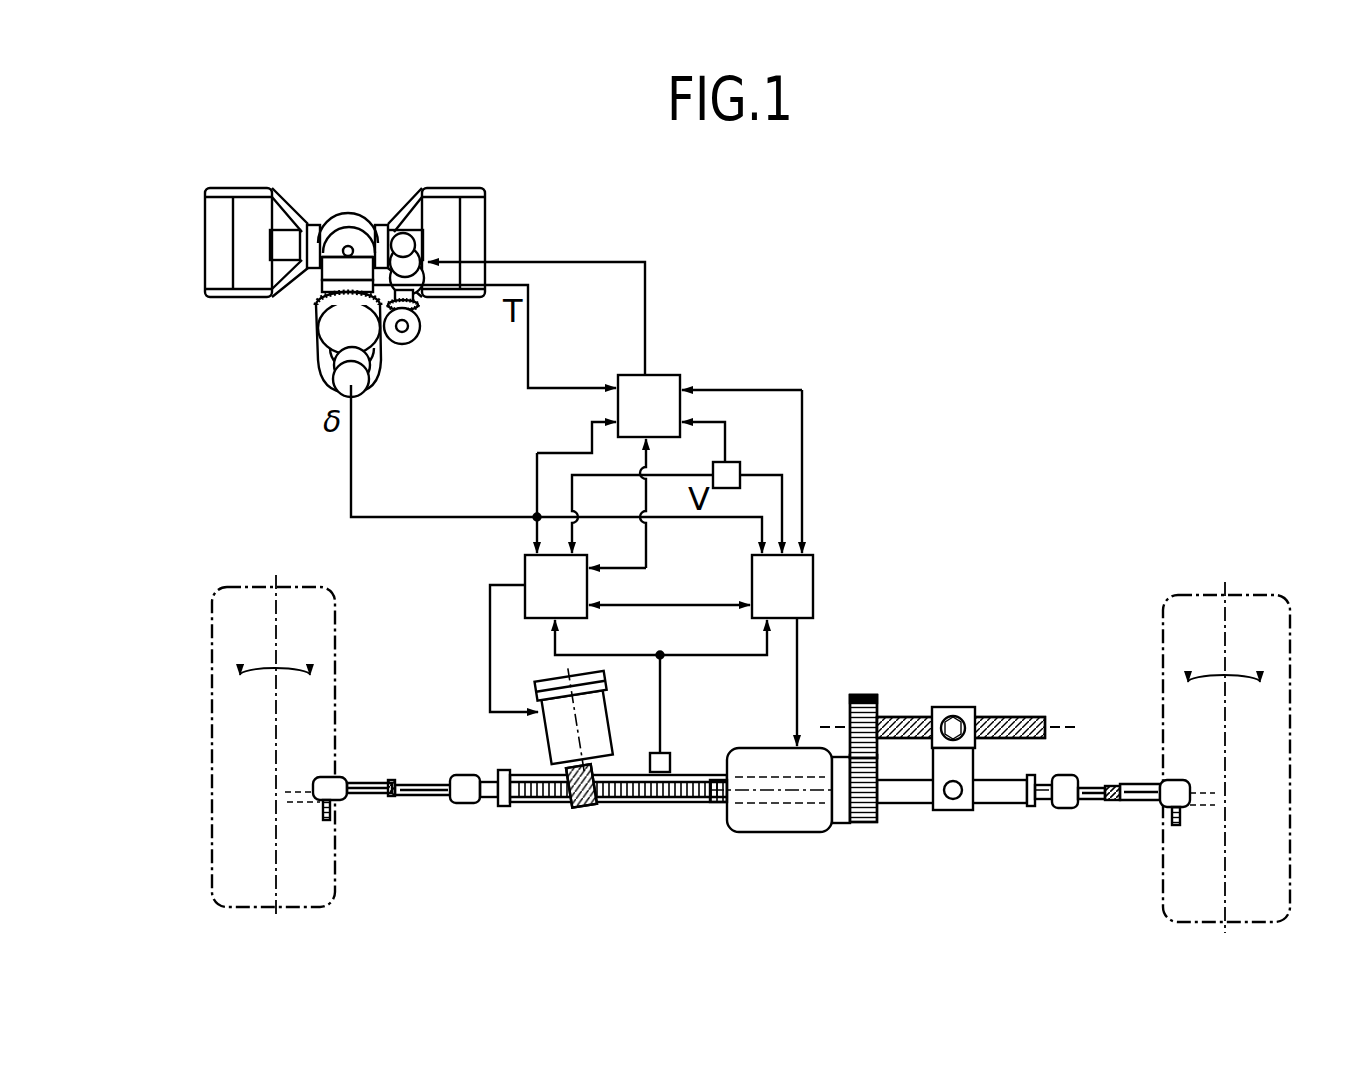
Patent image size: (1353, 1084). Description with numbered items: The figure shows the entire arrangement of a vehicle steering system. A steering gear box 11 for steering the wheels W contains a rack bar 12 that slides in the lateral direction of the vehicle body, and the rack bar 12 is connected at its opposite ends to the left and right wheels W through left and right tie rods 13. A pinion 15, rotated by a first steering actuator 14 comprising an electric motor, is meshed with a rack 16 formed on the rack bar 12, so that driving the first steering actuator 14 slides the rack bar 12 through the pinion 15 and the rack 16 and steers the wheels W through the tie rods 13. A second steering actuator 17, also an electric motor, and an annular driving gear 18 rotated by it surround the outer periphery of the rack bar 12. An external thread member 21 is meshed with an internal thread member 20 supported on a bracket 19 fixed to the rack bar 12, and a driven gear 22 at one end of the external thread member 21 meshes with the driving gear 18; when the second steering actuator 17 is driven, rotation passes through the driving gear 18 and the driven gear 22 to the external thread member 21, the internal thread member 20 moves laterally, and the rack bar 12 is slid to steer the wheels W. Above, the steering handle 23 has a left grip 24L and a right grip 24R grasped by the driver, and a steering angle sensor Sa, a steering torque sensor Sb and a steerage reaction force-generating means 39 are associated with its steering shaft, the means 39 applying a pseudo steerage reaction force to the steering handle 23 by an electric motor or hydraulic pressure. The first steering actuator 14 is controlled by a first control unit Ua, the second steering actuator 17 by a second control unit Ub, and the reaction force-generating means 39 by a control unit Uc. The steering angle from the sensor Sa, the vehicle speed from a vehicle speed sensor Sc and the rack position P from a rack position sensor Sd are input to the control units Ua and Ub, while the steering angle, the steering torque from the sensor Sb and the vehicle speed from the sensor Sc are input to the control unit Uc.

The steering gear box 11 is at (552, 795).
The rack bar 12 is at (700, 768).
The tie rod 13 is at (368, 777).
The first steering actuator 14 is at (553, 735).
The pinion 15 is at (577, 808).
The rack 16 is at (657, 802).
The second steering actuator 17 is at (760, 832).
The driving gear 18 is at (862, 822).
The bracket 19 is at (960, 810).
The internal thread member 20 is at (1012, 717).
The external thread member 21 is at (963, 707).
The driven gear 22 is at (865, 695).
The steering handle 23 is at (329, 208).
The right grip 24R is at (222, 232).
The left grip 24L is at (472, 222).
The steerage reaction force-generating means 39 is at (420, 247).
The steering angle sensor Sa is at (375, 338).
The steering torque sensor Sb is at (333, 284).
The vehicle speed sensor Sc is at (735, 462).
The rack position sensor Sd is at (663, 752).
The first steering actuator electronic control unit Ua is at (573, 605).
The second steering actuator electronic control unit Ub is at (800, 605).
The steerage reaction force-generating means electronic control unit Uc is at (667, 426).
The wheel W is at (248, 590).
The rack position P is at (639, 744).